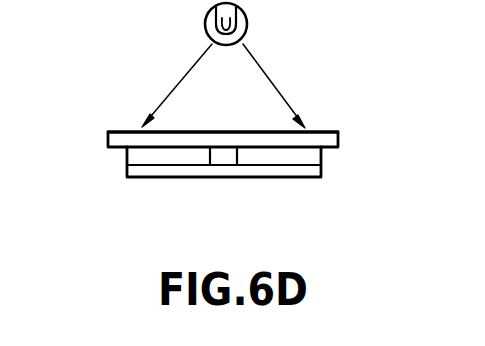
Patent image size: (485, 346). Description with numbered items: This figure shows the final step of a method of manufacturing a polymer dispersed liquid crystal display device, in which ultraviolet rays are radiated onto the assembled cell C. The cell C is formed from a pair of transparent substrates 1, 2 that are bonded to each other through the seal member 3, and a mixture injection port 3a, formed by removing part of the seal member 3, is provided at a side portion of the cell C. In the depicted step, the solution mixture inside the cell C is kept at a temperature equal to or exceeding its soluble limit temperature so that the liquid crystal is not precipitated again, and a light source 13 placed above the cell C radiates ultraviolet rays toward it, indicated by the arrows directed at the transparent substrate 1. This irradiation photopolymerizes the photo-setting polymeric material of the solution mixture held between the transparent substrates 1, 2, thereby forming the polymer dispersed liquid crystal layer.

The transparent substrate 1 is at (121, 139).
The transparent substrate 2 is at (140, 170).
The seal member 3 is at (305, 157).
The mixture injection port 3a is at (222, 158).
The light source 13 is at (247, 32).
The cell C is at (328, 128).